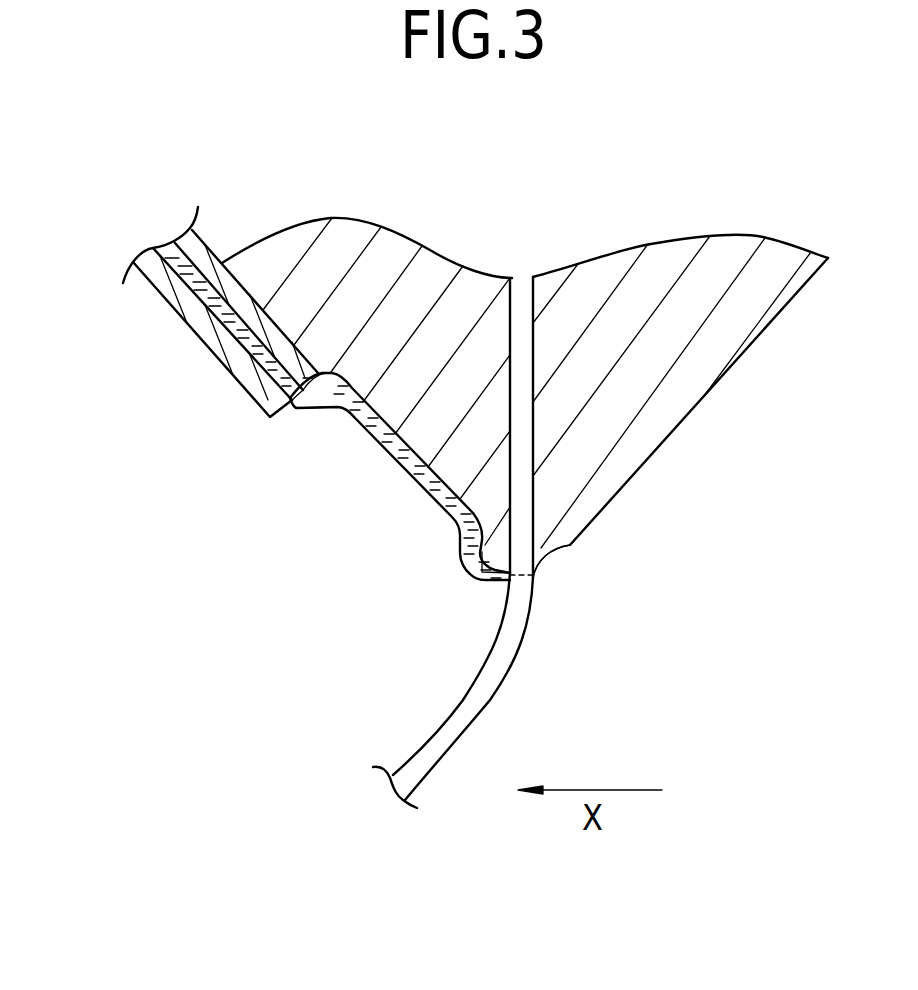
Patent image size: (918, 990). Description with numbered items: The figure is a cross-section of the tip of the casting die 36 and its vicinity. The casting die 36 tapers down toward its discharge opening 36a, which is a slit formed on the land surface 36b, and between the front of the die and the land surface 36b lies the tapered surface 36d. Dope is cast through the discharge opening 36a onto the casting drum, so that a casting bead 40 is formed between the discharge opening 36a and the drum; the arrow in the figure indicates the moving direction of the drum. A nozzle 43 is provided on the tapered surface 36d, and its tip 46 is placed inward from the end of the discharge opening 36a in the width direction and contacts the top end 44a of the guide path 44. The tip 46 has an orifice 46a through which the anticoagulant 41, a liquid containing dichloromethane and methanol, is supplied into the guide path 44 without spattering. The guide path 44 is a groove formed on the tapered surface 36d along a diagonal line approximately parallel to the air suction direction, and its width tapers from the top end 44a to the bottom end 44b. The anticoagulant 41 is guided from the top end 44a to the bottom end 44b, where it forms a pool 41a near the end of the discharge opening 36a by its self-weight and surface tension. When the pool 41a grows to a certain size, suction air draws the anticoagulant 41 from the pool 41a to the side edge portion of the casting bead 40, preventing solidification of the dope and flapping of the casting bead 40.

The casting die 36 is at (662, 267).
The discharge opening 36a is at (521, 578).
The land surface 36b is at (566, 561).
The tapered surface 36d is at (240, 300).
The casting bead 40 is at (492, 687).
The anticoagulant 41 is at (345, 408).
The pool 41a is at (482, 568).
The nozzle 43 is at (167, 343).
The guide path 44 is at (383, 487).
The top end of guide path 44a is at (343, 372).
The bottom end of guide path 44b is at (485, 508).
The tip of nozzle 46 is at (293, 398).
The orifice 46a is at (297, 383).